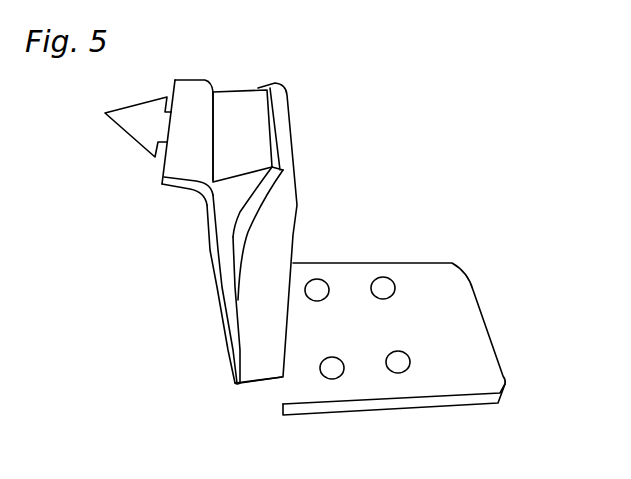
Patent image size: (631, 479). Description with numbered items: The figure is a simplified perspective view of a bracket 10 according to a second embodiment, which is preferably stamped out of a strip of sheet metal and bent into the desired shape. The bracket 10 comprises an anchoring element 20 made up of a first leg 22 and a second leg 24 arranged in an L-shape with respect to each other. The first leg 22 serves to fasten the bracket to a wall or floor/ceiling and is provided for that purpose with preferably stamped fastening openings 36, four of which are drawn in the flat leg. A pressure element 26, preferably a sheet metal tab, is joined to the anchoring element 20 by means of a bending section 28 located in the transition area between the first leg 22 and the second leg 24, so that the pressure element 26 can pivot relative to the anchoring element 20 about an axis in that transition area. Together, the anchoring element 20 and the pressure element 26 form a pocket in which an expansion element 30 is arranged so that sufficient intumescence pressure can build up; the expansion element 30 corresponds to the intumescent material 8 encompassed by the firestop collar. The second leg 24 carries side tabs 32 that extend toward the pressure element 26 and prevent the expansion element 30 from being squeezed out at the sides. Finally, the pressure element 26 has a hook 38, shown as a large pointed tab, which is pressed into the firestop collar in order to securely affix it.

The bracket 10 is at (441, 84).
The anchoring element 20 is at (402, 238).
The first leg 22 is at (458, 310).
The second leg 24 is at (303, 133).
The pressure element 26 is at (178, 202).
The bending section 28 is at (271, 400).
The expansion element 30 is at (237, 107).
The intumescent material 8 is at (242, 136).
The side tabs 32 is at (257, 235).
The fastening openings 36 is at (391, 279).
The hook 38 is at (121, 148).